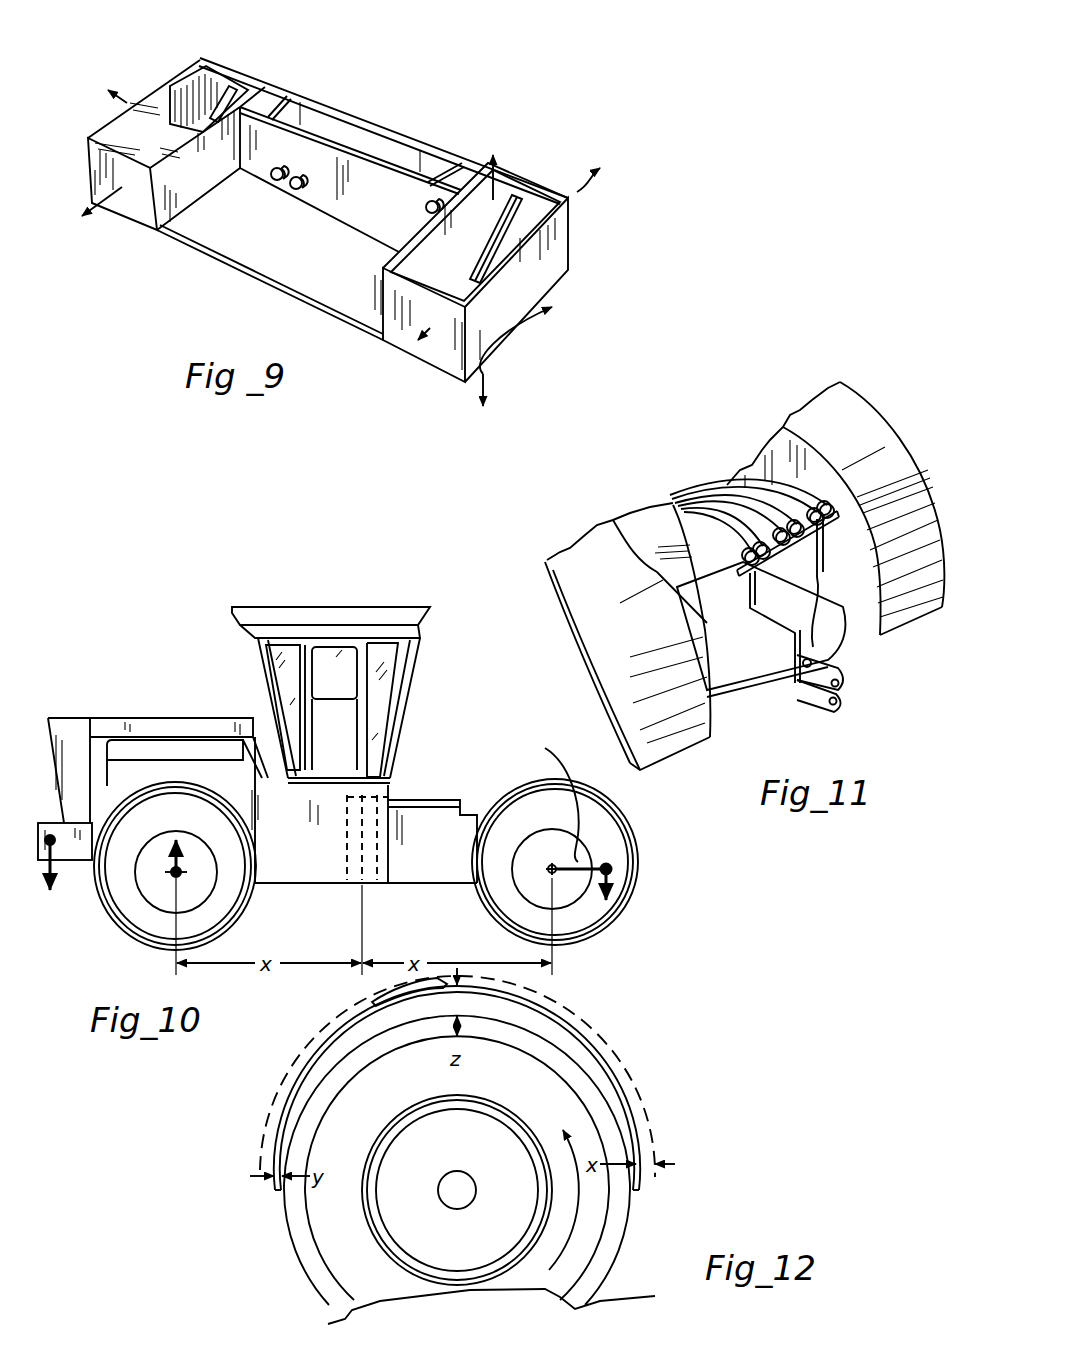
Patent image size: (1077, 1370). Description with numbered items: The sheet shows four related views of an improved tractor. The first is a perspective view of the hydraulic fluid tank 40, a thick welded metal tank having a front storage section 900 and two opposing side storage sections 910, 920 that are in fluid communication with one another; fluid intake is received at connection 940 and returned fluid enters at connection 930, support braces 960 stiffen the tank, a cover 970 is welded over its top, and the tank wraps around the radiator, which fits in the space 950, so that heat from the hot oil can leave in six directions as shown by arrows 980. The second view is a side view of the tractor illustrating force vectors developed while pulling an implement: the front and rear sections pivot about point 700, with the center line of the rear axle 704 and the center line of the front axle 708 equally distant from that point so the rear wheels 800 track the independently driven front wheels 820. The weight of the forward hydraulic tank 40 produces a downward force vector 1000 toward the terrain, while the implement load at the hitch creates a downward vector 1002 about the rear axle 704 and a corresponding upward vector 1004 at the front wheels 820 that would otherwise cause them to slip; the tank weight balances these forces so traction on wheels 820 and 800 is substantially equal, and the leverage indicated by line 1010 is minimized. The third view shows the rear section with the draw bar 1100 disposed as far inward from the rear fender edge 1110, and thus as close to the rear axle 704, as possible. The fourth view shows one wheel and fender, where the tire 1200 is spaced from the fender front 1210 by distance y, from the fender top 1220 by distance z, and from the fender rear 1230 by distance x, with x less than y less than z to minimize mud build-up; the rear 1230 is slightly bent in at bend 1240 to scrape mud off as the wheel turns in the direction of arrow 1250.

In FIG. 9, the hydraulic fluid tank 40 is at (350, 97).
In FIG. 10, the hydraulic fluid tank 40 is at (50, 820).
In FIG. 9, the front storage section 900 is at (380, 140).
In FIG. 9, the side storage section 910 is at (190, 100).
In FIG. 9, the side storage section 920 is at (514, 244).
In FIG. 9, the fluid return connection 930 is at (250, 199).
In FIG. 9, the fluid intake connection 940 is at (425, 216).
In FIG. 9, the radiator space 950 is at (300, 275).
In FIG. 9, the support braces 960 is at (220, 86).
In FIG. 9, the cover 970 is at (150, 120).
In FIG. 9, the arrows 980 is at (496, 168).
In FIG. 10, the pivot point 700 is at (392, 796).
In FIG. 10, the rear axle 704 is at (550, 930).
In FIG. 10, the front axle 708 is at (190, 938).
In FIG. 10, the rear wheels 800 is at (583, 921).
In FIG. 10, the front wheels 820 is at (158, 928).
In FIG. 10, the force vector 1000 is at (60, 870).
In FIG. 10, the downward force vector 1002 is at (612, 893).
In FIG. 10, the upward force vector 1004 is at (180, 875).
In FIG. 10, the leverage line 1010 is at (538, 796).
In FIG. 11, the draw bar 1100 is at (778, 688).
In FIG. 11, the rear fender edge 1110 is at (912, 630).
In FIG. 12, the tire 1200 is at (313, 1227).
In FIG. 12, the fender front 1210 is at (280, 1143).
In FIG. 12, the fender top 1220 is at (373, 999).
In FIG. 12, the fender rear 1230 is at (637, 1135).
In FIG. 12, the bend 1240 is at (648, 1178).
In FIG. 12, the arrow 1250 is at (578, 1190).